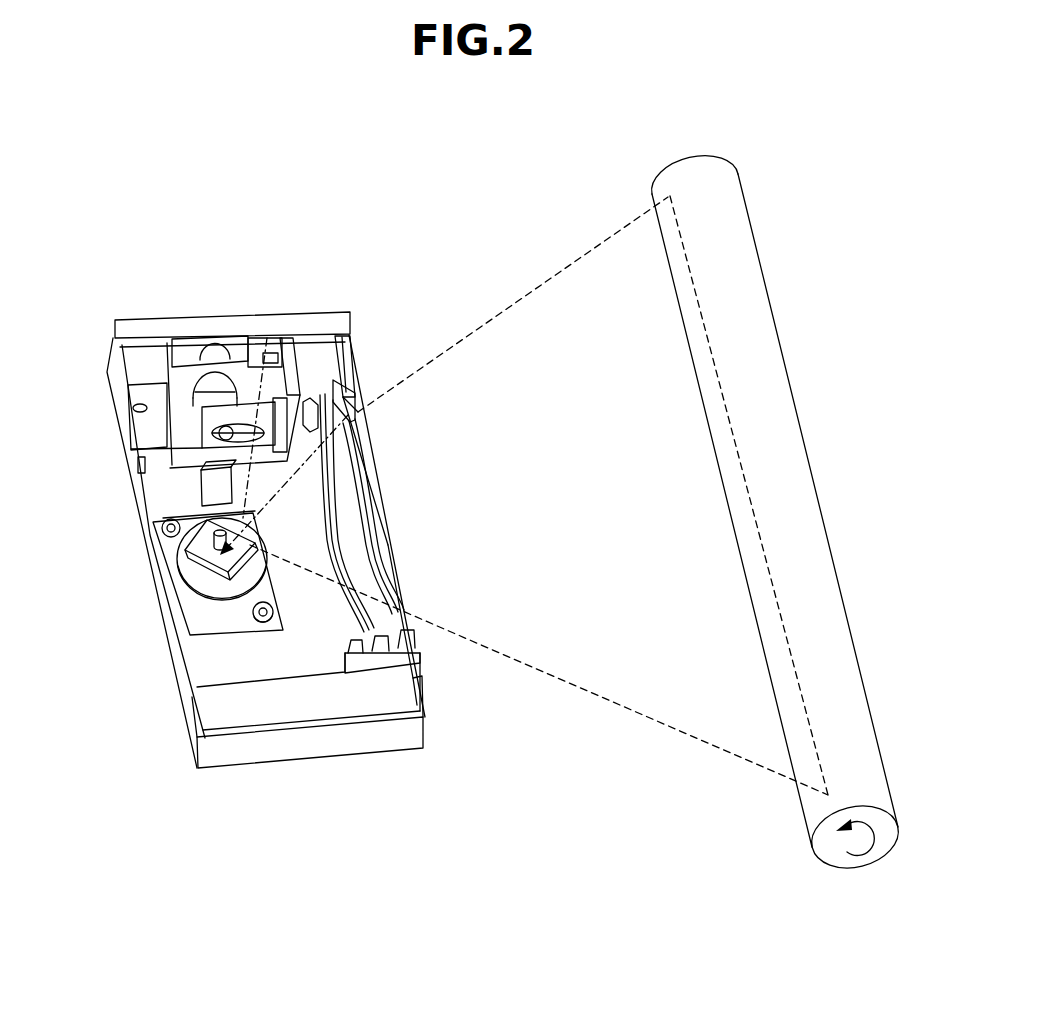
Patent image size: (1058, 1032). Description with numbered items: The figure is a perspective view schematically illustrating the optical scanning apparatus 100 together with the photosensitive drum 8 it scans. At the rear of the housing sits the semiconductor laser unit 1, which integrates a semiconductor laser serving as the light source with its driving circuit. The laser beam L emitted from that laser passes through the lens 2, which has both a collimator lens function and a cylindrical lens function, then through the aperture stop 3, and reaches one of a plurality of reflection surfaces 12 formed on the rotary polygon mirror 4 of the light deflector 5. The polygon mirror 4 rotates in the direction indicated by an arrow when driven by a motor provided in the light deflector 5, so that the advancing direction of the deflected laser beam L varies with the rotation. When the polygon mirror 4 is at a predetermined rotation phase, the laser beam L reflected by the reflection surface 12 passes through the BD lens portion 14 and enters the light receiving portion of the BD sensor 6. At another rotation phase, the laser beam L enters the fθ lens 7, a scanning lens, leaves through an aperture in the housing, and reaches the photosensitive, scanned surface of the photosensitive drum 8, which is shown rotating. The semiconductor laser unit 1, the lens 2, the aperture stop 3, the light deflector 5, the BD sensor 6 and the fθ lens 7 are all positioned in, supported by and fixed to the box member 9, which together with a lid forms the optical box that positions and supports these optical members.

The optical scanning apparatus 100 is at (262, 241).
The semiconductor laser unit 1 is at (160, 318).
The lens 2 is at (200, 402).
The aperture stop 3 is at (203, 465).
The rotary polygon mirror 4 is at (195, 546).
The light deflector 5 is at (200, 626).
The BD sensor 6 is at (261, 407).
The fθ lens 7 is at (380, 580).
The photosensitive drum 8 is at (696, 168).
The box member 9 is at (177, 673).
The reflection surface 12 is at (192, 576).
The BD lens portion 14 is at (348, 346).
The laser beam L is at (232, 462).